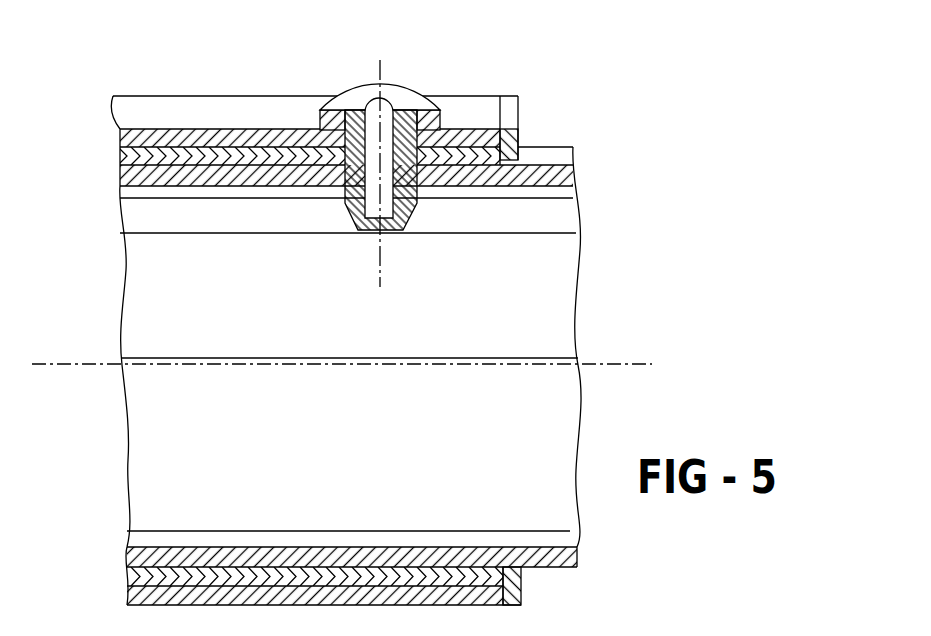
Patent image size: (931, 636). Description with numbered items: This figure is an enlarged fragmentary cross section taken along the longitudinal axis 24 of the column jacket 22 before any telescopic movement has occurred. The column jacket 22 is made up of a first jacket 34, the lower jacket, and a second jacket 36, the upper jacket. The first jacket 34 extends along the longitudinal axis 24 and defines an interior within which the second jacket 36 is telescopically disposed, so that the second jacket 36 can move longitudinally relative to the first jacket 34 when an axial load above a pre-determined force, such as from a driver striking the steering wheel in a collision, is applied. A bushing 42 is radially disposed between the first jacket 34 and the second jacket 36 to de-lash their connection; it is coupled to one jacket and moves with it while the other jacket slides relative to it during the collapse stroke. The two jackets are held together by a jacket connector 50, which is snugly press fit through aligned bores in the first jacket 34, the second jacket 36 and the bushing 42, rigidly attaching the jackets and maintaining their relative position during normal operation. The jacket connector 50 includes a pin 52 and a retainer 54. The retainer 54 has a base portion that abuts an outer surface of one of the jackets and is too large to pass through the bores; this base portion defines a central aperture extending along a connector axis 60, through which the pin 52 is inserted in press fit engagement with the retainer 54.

The column jacket 22 is at (543, 57).
The longitudinal axis 24 is at (598, 364).
The first jacket 34 is at (565, 158).
The second jacket 36 is at (226, 98).
The bushing 42 is at (512, 140).
The jacket connector 50 is at (385, 124).
The pin 52 is at (387, 88).
The retainer 54 is at (333, 100).
The connector axis 60 is at (382, 250).